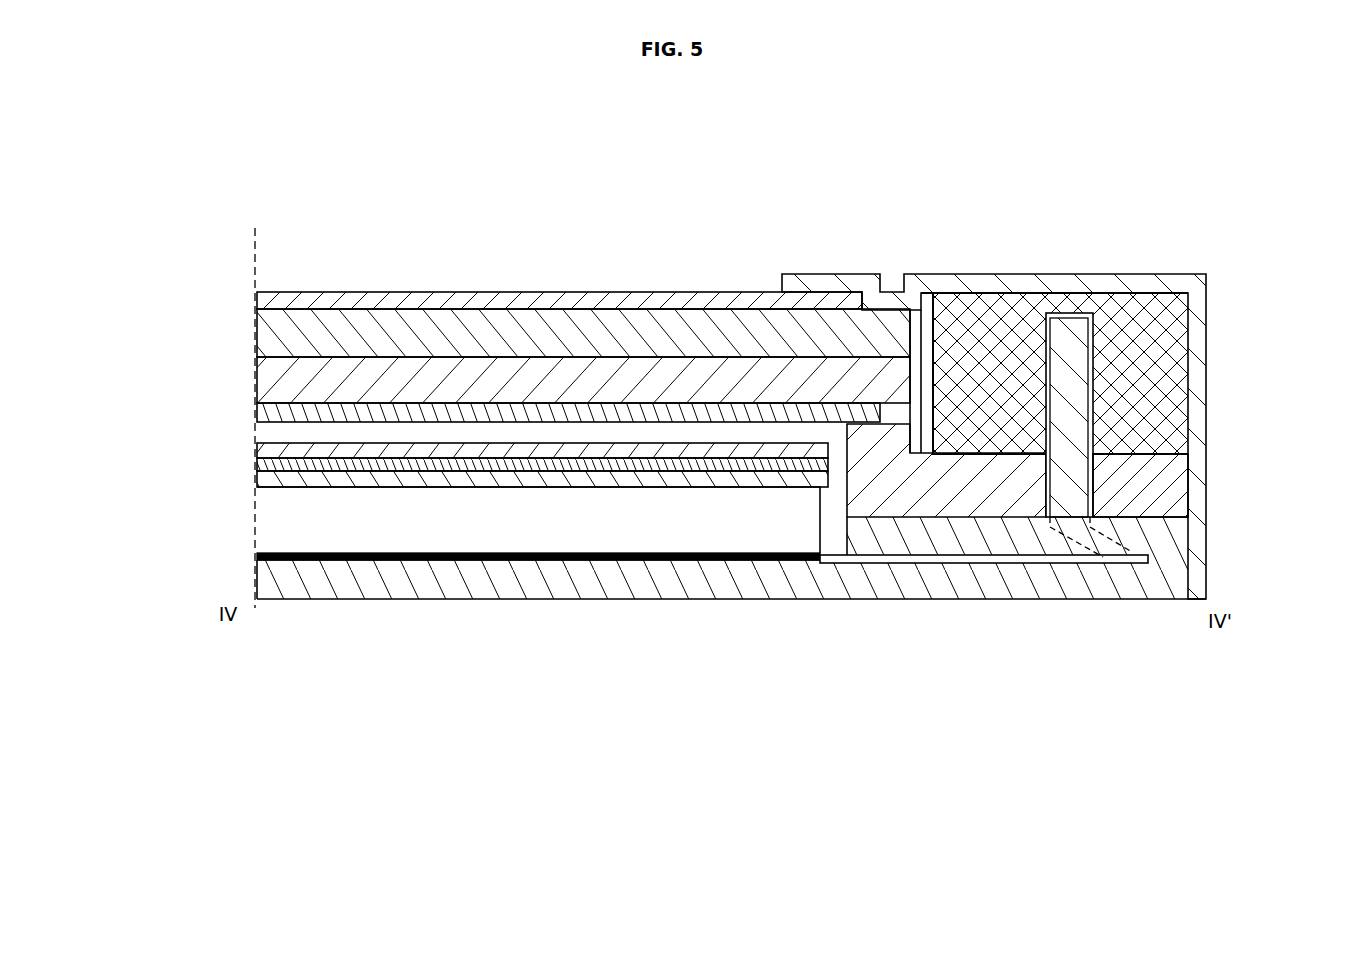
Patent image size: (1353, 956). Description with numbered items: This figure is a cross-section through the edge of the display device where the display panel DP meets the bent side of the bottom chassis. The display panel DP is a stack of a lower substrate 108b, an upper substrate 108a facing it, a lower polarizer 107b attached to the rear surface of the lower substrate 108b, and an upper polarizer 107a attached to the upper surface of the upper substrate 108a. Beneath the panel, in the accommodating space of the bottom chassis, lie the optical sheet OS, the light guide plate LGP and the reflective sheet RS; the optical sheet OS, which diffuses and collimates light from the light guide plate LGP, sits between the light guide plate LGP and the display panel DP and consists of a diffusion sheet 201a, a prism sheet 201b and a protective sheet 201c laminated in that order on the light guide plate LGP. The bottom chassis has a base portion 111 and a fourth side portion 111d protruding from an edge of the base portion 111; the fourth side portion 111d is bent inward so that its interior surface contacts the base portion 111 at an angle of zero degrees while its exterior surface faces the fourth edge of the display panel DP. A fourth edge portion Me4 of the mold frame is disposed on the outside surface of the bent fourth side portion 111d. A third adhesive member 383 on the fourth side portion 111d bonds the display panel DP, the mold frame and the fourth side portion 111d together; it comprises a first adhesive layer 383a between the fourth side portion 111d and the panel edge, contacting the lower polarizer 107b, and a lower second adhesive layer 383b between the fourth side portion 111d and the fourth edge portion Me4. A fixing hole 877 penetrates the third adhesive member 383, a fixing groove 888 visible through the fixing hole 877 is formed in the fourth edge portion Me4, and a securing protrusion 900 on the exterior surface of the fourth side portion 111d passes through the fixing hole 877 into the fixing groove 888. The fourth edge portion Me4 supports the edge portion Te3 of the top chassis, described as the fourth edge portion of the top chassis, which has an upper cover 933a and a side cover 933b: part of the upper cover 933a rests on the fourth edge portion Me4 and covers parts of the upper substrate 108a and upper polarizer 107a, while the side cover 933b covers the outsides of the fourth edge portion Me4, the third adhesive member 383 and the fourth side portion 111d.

The display panel DP is at (522, 197).
The upper polarizer 107a is at (523, 297).
The upper substrate 108a is at (587, 312).
The lower substrate 108b is at (660, 370).
The lower polarizer 107b is at (728, 413).
The optical sheet OS is at (157, 427).
The diffusion sheet 201a is at (258, 478).
The prism sheet 201b is at (258, 463).
The protective sheet 201c is at (258, 447).
The light guide plate LGP is at (702, 527).
The reflective sheet RS is at (588, 557).
The base portion 111 is at (473, 580).
The fourth side portion 111d is at (872, 535).
The third adhesive member 383 is at (1000, 681).
The first adhesive layer 383a is at (878, 465).
The second adhesive layer 383b is at (998, 487).
The top case Te3 is at (1125, 192).
The top case upper portion 933a is at (1125, 298).
The top case side portion 933b is at (1197, 343).
The fourth edge portion of the mold frame Me4 is at (973, 308).
The fixing groove 888 is at (1093, 362).
The securing protrusion 900 is at (1070, 408).
The fixing hole 877 is at (1093, 480).